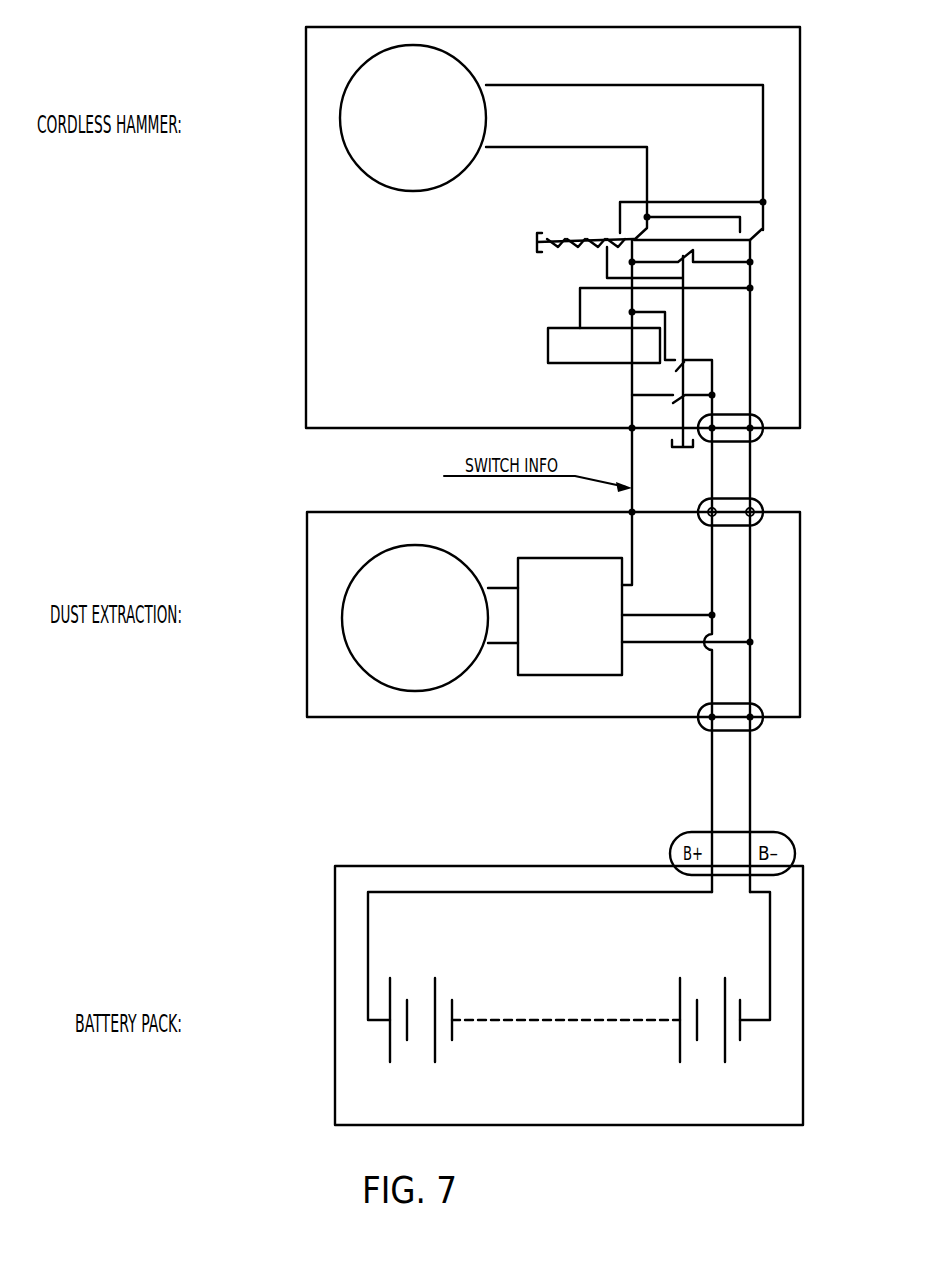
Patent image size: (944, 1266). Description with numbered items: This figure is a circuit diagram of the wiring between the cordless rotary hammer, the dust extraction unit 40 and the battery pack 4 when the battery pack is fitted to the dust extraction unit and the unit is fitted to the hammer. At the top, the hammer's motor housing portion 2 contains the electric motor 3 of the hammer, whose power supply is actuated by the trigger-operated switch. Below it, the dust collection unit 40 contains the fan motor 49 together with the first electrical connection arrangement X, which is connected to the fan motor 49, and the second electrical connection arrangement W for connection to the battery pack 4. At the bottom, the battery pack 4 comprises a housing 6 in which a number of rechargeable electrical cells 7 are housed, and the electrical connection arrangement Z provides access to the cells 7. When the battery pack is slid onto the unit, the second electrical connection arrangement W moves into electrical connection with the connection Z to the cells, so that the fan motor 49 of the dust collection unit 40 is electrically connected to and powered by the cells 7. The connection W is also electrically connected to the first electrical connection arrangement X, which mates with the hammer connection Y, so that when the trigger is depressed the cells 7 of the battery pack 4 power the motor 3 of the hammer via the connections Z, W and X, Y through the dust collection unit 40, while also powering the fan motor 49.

The motor housing portion 2 is at (529, 459).
The electric motor 3 is at (355, 164).
The battery pack 4 is at (545, 995).
The housing 6 is at (335, 1047).
The rechargeable electrical cells 7 is at (422, 1070).
The dust collection unit 40 is at (535, 643).
The fan motor 49 is at (352, 574).
The second electrical connection arrangement W is at (764, 722).
The first electrical connection arrangement X is at (766, 505).
The hammer electrical connection Y is at (764, 434).
The electrical connection arrangement Z is at (795, 840).